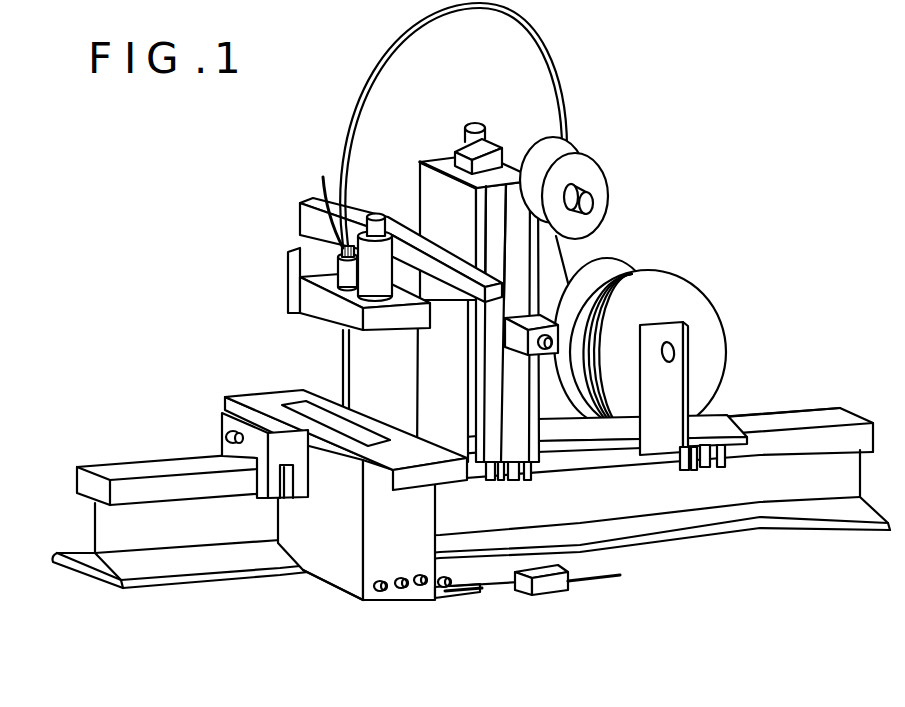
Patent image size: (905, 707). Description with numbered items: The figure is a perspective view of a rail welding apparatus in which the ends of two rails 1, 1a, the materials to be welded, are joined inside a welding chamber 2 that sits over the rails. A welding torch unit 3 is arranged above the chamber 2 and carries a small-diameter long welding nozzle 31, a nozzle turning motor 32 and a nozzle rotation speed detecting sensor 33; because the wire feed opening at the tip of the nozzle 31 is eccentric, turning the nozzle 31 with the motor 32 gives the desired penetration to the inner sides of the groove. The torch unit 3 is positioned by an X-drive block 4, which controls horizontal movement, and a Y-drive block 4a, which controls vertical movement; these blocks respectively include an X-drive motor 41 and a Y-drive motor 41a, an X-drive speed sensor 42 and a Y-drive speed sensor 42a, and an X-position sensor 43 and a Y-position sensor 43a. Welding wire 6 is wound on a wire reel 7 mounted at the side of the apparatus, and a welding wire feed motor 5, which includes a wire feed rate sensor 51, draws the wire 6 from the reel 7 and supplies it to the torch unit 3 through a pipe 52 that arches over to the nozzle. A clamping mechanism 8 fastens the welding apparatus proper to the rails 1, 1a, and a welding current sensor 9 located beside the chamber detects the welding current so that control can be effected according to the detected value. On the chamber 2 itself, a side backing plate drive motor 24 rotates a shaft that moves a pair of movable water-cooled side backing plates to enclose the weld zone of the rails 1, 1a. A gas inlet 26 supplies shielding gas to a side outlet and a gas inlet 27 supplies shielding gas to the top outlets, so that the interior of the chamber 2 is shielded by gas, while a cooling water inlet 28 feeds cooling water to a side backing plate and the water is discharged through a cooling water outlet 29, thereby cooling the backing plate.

The rail 1 is at (118, 468).
The rail 1a is at (805, 413).
The welding chamber 2 is at (337, 505).
The welding torch unit 3 is at (313, 290).
The X-drive block 4 is at (445, 330).
The Y-drive block 4a is at (430, 160).
The welding wire feed motor 5 is at (582, 188).
The welding wire 6 is at (567, 267).
The wire reel 7 is at (710, 338).
The clamping mechanism 8 is at (523, 474).
The welding current sensor 9 is at (570, 592).
The side backing plate drive motor 24 is at (418, 484).
The gas inlet 26 is at (412, 589).
The gas inlet 27 is at (226, 433).
The cooling water inlet 28 is at (360, 593).
The cooling water outlet 29 is at (455, 596).
The welding nozzle 31 is at (340, 352).
The nozzle turning motor 32 is at (330, 266).
The nozzle rotation speed detecting sensor 33 is at (377, 214).
The X-drive motor 41 is at (510, 333).
The Y-drive motor 41a is at (436, 150).
The X-drive speed sensor 42 is at (540, 350).
The Y-drive speed sensor 42a is at (475, 122).
The X-position sensor 43 is at (312, 212).
The Y-position sensor 43a is at (507, 195).
The wire feed rate sensor 51 is at (592, 206).
The pipe 52 is at (566, 92).